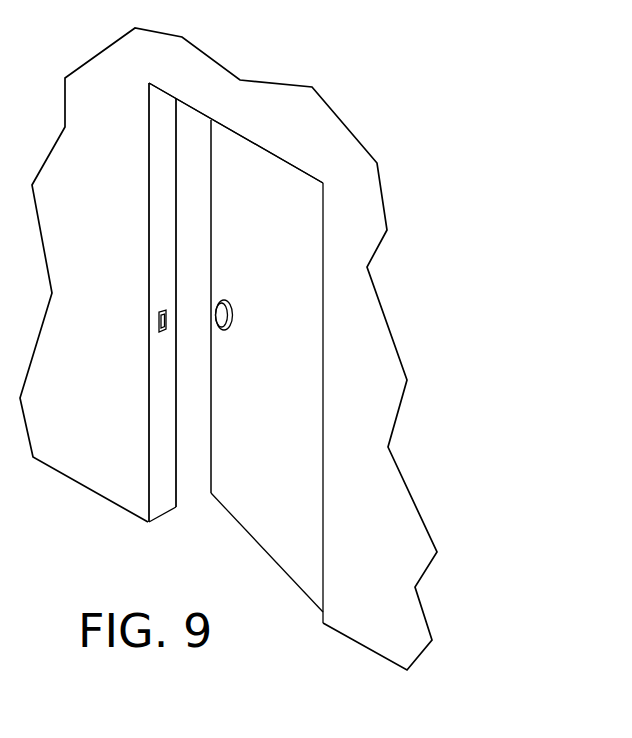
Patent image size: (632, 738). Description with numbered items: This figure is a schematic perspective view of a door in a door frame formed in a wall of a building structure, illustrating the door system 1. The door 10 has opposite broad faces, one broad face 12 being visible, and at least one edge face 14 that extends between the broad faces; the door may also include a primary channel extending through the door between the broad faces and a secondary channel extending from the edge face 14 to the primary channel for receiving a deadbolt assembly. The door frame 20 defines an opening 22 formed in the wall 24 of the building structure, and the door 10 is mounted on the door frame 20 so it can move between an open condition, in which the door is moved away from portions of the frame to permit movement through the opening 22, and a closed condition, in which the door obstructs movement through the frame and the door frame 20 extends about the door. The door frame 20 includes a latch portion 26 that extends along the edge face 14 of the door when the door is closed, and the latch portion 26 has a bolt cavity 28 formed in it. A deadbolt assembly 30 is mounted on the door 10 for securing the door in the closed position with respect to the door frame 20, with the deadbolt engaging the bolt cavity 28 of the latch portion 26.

The door system 1 is at (370, 128).
The door 10 is at (209, 522).
The broad face 12 is at (283, 551).
The edge face 14 is at (212, 405).
The door frame 20 is at (144, 172).
The opening 22 is at (237, 130).
The wall 24 is at (85, 137).
The latch portion 26 is at (163, 225).
The bolt cavity 28 is at (159, 320).
The deadbolt assembly 30 is at (233, 313).